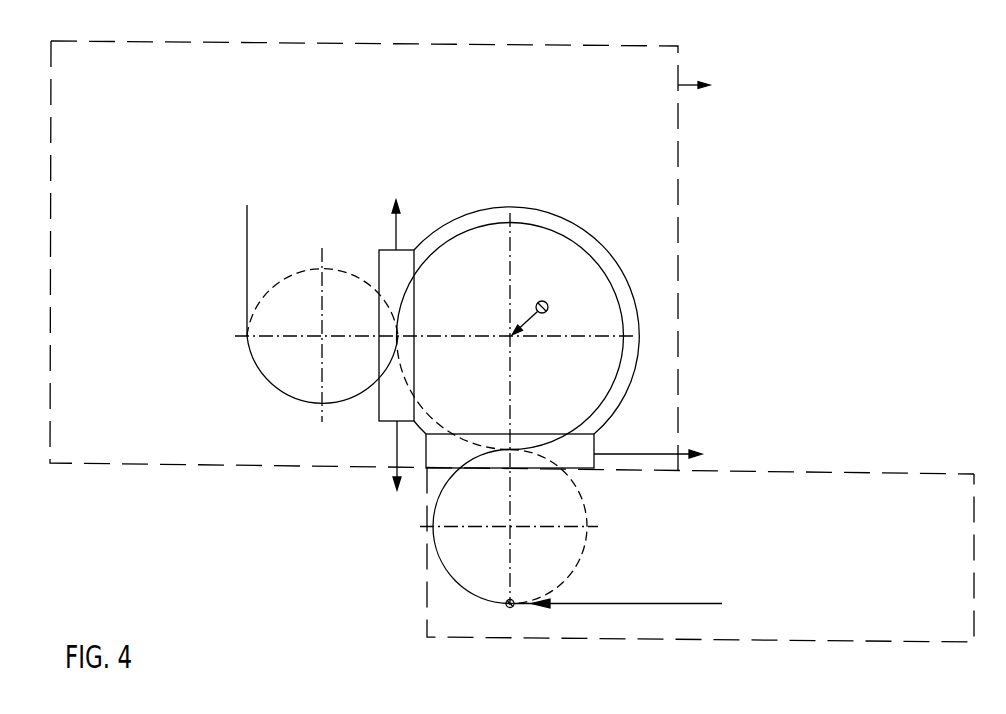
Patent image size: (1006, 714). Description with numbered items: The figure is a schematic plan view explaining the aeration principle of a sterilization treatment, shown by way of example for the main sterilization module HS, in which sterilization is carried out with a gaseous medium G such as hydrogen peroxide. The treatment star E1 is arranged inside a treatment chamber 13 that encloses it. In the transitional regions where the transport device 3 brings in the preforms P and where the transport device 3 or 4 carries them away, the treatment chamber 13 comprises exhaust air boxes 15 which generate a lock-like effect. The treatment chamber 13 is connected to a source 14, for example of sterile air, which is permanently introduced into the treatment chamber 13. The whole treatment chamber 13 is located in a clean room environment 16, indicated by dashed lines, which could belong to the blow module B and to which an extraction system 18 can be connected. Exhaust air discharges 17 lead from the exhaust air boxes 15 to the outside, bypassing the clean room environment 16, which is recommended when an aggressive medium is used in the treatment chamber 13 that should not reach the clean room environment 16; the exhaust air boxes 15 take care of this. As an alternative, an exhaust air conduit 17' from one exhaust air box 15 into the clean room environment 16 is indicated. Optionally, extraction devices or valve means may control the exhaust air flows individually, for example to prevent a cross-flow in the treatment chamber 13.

The transport device 3 is at (577, 494).
The transport device 4 is at (345, 268).
The treatment chamber 13 is at (634, 272).
The source 14 is at (549, 310).
The exhaust air boxes 15 is at (383, 407).
The clean room environment 16 is at (681, 258).
The exhaust air discharges 17 is at (527, 461).
The exhaust air conduit 17' is at (412, 216).
The extraction system 18 is at (690, 87).
The treatment star E1 is at (591, 259).
The main sterilization module HS is at (563, 204).
The gaseous medium G is at (620, 323).
The blow module B is at (483, 130).
The preforms P is at (512, 598).